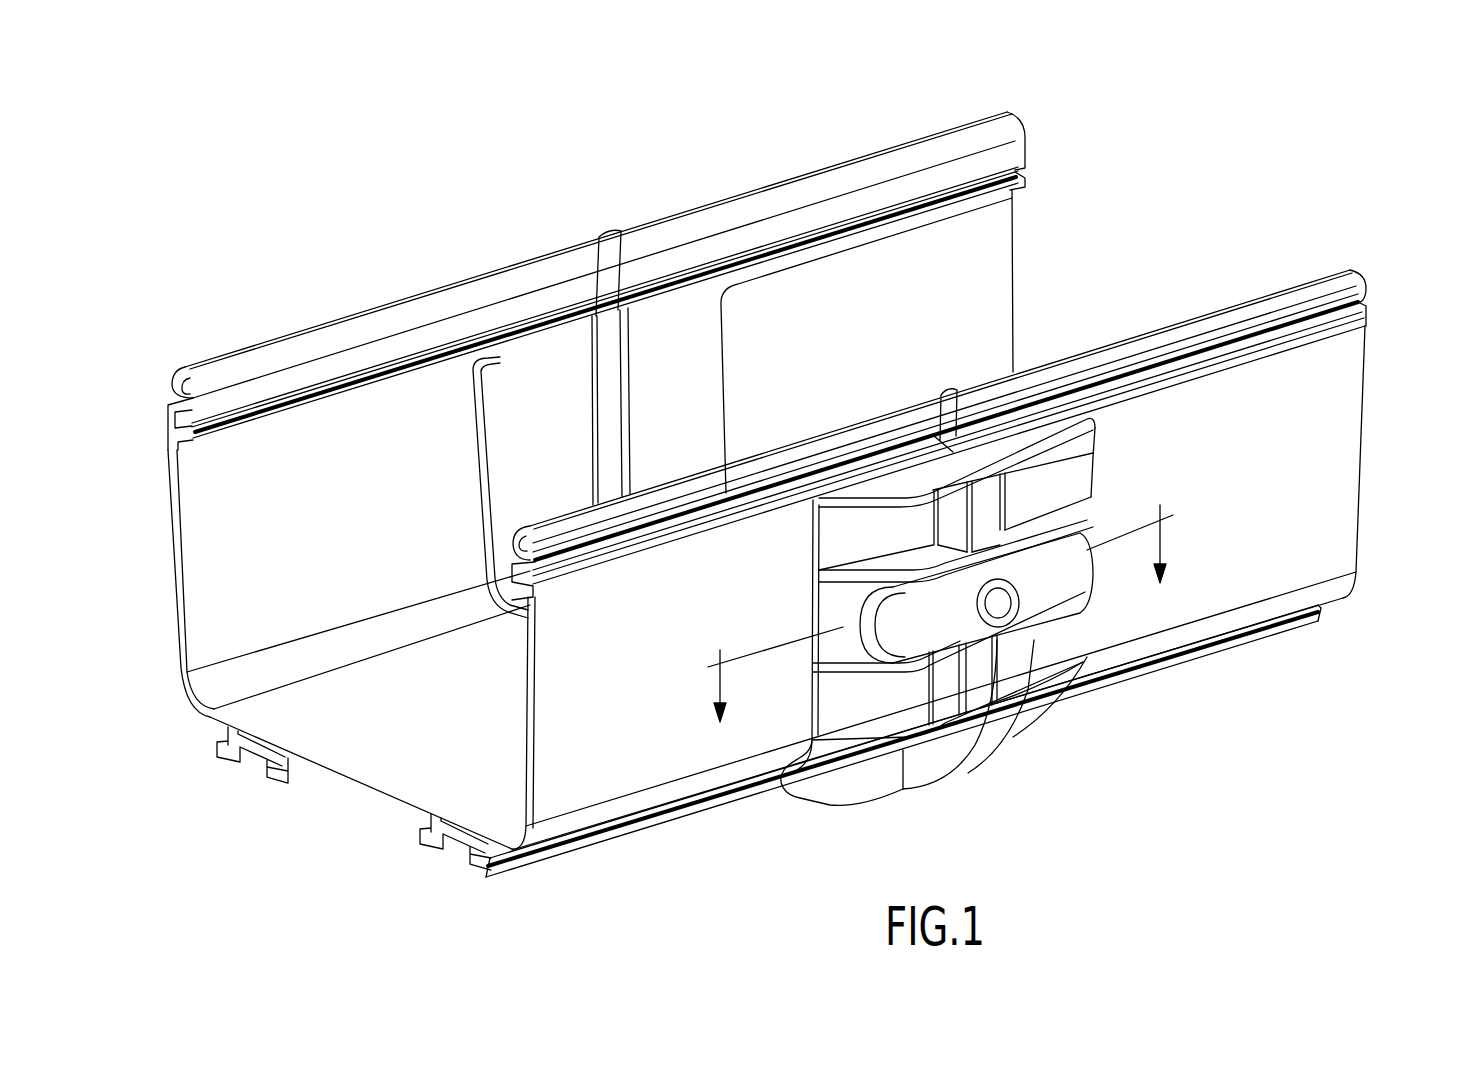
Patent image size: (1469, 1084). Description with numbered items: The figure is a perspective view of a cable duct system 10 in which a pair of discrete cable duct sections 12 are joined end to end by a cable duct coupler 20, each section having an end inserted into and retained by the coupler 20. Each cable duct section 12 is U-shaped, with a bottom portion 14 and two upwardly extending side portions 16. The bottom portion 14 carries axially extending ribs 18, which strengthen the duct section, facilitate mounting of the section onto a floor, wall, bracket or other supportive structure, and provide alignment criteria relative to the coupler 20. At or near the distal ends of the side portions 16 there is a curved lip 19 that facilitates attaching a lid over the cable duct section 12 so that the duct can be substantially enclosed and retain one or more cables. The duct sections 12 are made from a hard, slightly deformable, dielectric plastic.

The cable duct system 10 is at (782, 514).
The cable duct section 12 is at (1357, 450).
The bottom portion 14 is at (433, 763).
The side portion 16 is at (285, 517).
The axially extending rib 18 is at (233, 763).
The curved lip 19 is at (338, 333).
The cable duct coupler 20 is at (1010, 740).